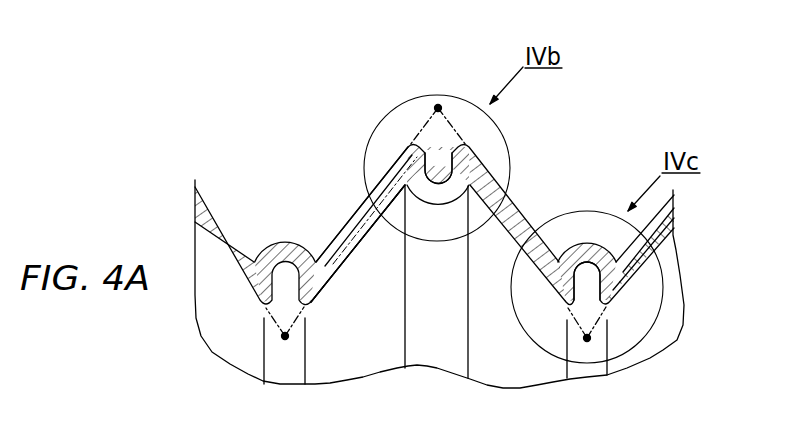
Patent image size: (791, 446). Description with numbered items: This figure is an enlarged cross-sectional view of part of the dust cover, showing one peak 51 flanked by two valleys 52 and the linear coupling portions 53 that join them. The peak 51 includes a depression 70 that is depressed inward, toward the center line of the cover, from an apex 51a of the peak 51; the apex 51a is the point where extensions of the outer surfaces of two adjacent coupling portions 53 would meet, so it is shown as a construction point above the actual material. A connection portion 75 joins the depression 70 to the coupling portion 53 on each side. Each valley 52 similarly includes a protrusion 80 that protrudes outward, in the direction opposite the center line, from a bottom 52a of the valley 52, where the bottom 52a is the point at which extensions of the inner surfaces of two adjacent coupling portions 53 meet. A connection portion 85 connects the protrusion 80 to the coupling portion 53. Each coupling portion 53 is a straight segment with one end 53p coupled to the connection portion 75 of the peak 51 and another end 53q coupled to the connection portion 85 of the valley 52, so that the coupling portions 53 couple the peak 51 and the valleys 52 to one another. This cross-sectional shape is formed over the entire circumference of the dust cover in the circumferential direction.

The peak 51 is at (381, 176).
The apex 51a is at (437, 106).
The depression 70 is at (443, 143).
The connection portion 75 is at (378, 172).
The coupling portion 53 is at (380, 258).
The one end 53p is at (386, 182).
The another end 53q is at (356, 258).
The valley 52 is at (682, 272).
The bottom 52a is at (587, 342).
The protrusion 80 is at (591, 304).
The connection portion 85 is at (513, 292).